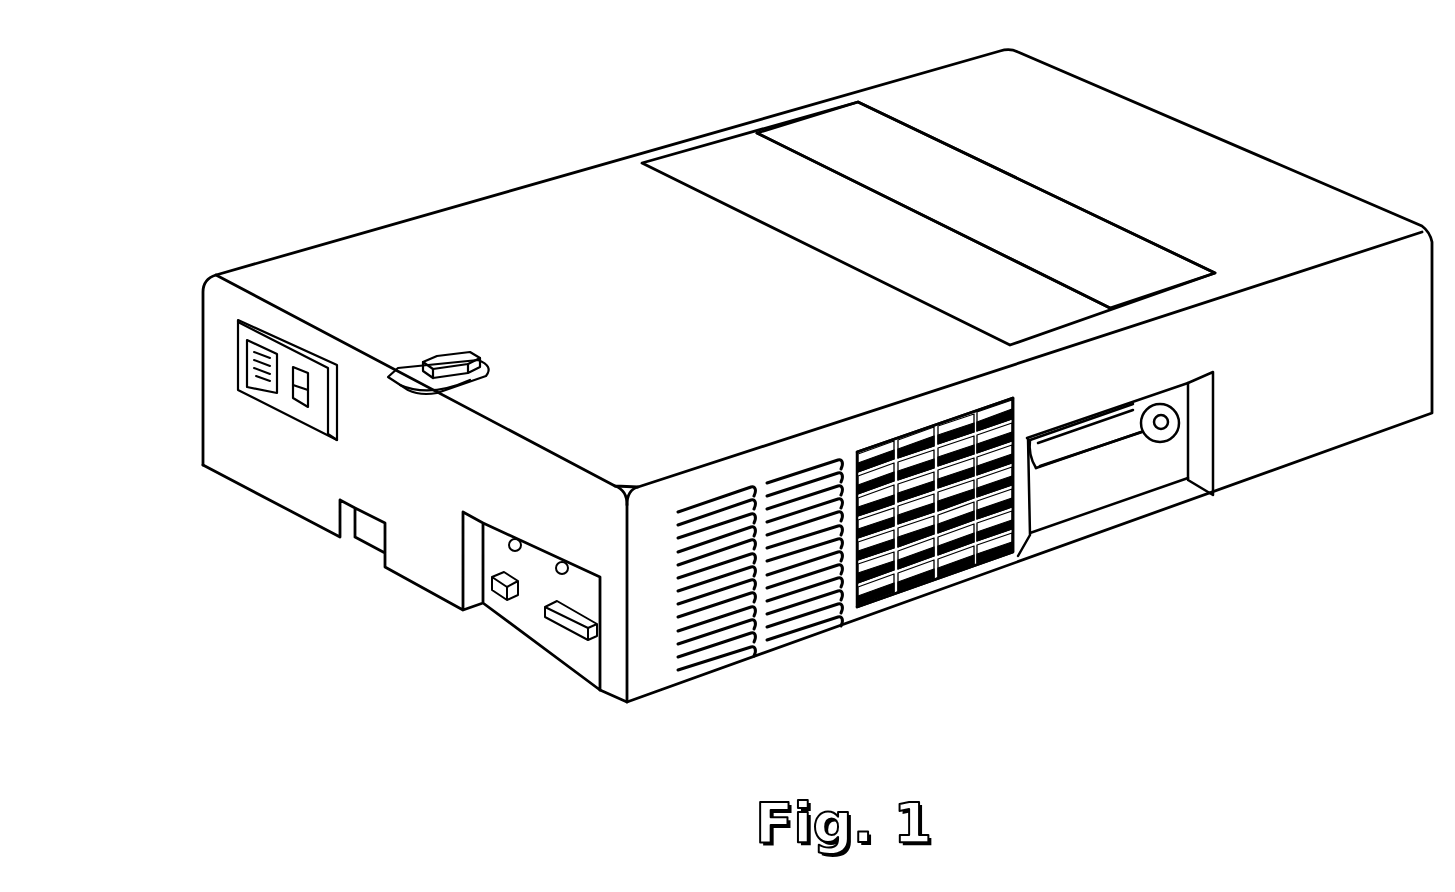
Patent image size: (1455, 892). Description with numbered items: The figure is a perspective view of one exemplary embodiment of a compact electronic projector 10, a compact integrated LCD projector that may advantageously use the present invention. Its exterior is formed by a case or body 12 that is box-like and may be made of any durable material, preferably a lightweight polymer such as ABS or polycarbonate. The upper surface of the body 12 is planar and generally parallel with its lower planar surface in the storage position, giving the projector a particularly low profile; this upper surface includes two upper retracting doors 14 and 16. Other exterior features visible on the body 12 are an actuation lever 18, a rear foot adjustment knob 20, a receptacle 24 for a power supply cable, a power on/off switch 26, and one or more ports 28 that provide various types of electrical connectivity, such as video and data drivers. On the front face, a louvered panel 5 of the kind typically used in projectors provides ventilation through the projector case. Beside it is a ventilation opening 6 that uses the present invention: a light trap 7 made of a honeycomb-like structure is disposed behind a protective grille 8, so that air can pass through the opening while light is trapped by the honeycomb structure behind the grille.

The compact electronic projector 10 is at (270, 170).
The case or body 12 is at (538, 203).
The upper retracting door 14 is at (822, 220).
The upper retracting door 16 is at (953, 180).
The louvered panel 5 is at (730, 633).
The ventilation opening 6 is at (927, 587).
The light trap 7 is at (922, 432).
The protective grille 8 is at (1000, 540).
The actuation lever 18 is at (1088, 460).
The rear foot adjustment knob 20 is at (450, 355).
The receptacle 24 is at (240, 370).
The power switch 26 is at (297, 395).
The ports 28 is at (565, 622).